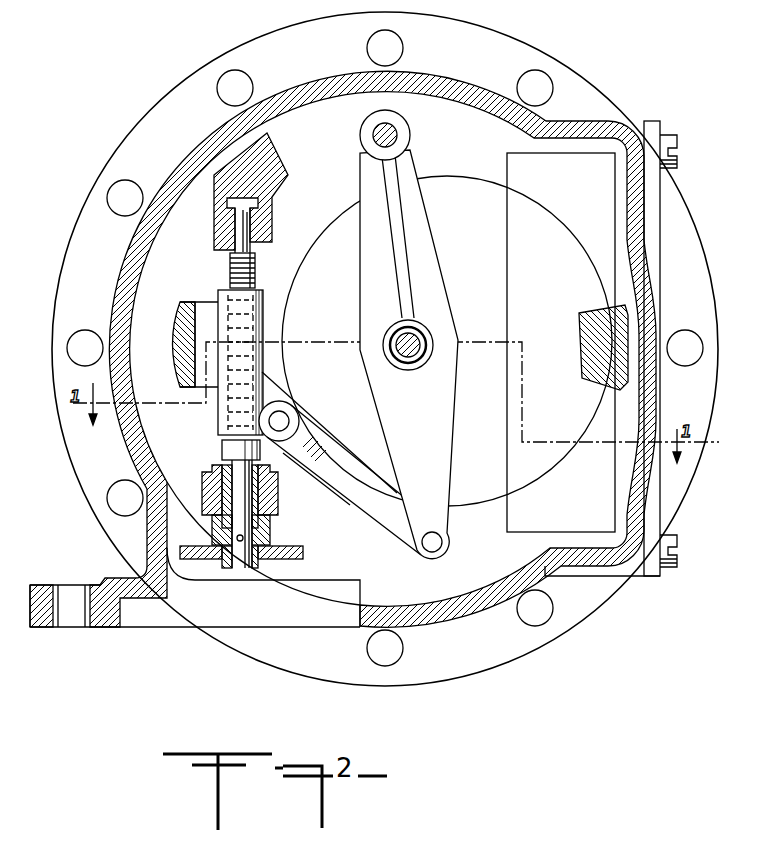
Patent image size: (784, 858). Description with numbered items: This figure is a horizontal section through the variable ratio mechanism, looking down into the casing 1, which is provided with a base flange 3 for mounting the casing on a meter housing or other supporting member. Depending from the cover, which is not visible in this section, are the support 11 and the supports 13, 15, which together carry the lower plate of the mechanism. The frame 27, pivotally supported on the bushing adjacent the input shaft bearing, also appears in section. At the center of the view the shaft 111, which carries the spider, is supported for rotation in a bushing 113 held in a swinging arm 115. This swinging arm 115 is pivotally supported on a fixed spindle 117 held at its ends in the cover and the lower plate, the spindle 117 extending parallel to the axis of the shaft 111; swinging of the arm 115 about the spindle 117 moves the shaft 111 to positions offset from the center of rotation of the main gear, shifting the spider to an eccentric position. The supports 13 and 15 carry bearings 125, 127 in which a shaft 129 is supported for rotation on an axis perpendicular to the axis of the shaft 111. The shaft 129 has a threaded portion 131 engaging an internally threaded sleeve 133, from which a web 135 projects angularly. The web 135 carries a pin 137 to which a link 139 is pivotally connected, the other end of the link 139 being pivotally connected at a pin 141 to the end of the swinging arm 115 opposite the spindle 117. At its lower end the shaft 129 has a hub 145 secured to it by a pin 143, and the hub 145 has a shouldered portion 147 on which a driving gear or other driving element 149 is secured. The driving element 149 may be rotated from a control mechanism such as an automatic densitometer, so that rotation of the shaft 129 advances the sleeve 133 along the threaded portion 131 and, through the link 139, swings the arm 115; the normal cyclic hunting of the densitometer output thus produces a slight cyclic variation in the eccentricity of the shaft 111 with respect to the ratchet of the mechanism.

The casing 1 is at (645, 496).
The base flange 3 is at (685, 452).
The support 11 is at (585, 347).
The support 13 is at (268, 163).
The support 15 is at (208, 489).
The frame 27 is at (172, 357).
The shaft 111 is at (424, 355).
The bushing 113 is at (419, 323).
The swinging arm 115 is at (446, 432).
The fixed spindle 117 is at (400, 122).
The bearing 125 is at (230, 221).
The bearing 127 is at (260, 504).
The shaft 129 is at (238, 242).
The threaded portion 131 is at (233, 267).
The internally threaded sleeve 133 is at (258, 346).
The web 135 is at (268, 384).
The pin 137 is at (283, 420).
The link 139 is at (343, 464).
The pin 141 is at (440, 539).
The pin 143 is at (244, 538).
The hub 145 is at (263, 531).
The shouldered portion 147 is at (253, 562).
The driving gear 149 is at (297, 554).